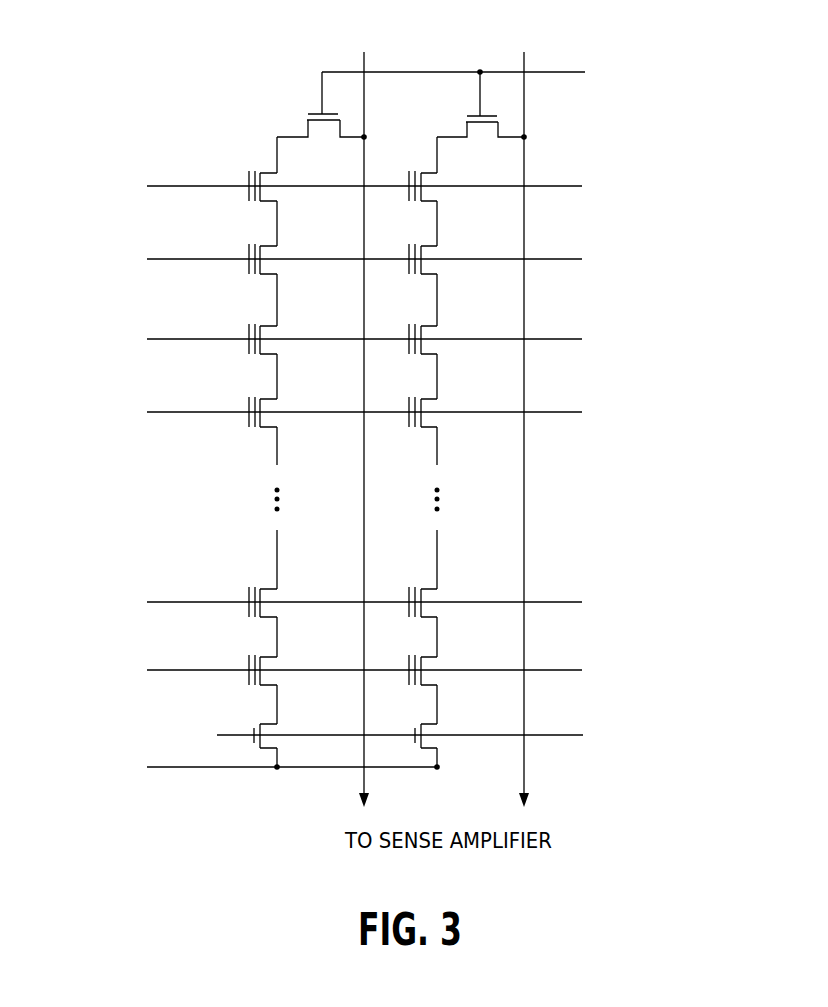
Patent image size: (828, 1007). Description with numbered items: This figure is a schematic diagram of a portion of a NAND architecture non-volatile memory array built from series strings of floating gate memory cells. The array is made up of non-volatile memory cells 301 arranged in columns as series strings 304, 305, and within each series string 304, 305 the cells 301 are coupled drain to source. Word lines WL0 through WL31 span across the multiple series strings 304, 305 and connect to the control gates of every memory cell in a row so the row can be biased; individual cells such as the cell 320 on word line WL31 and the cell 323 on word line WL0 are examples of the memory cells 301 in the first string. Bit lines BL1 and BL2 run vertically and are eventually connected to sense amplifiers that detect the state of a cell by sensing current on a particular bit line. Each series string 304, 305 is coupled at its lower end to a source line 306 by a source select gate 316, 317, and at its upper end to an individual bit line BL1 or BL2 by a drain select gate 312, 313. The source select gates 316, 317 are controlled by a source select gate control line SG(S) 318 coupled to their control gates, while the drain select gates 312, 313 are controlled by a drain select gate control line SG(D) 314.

The non-volatile memory cells 301 is at (224, 118).
The series string 304 is at (279, 769).
The series string 305 is at (439, 769).
The source line 306 is at (147, 778).
The drain select gate 312 is at (307, 113).
The drain select gate 313 is at (466, 113).
The drain select gate control line SG(D) 314 is at (571, 70).
The source select gate 316 is at (260, 750).
The source select gate 317 is at (422, 748).
The source select gate control line SG(S) 318 is at (568, 735).
The floating gate memory cell on WL31 320 is at (250, 204).
The floating gate memory cell on WL0 323 is at (249, 694).